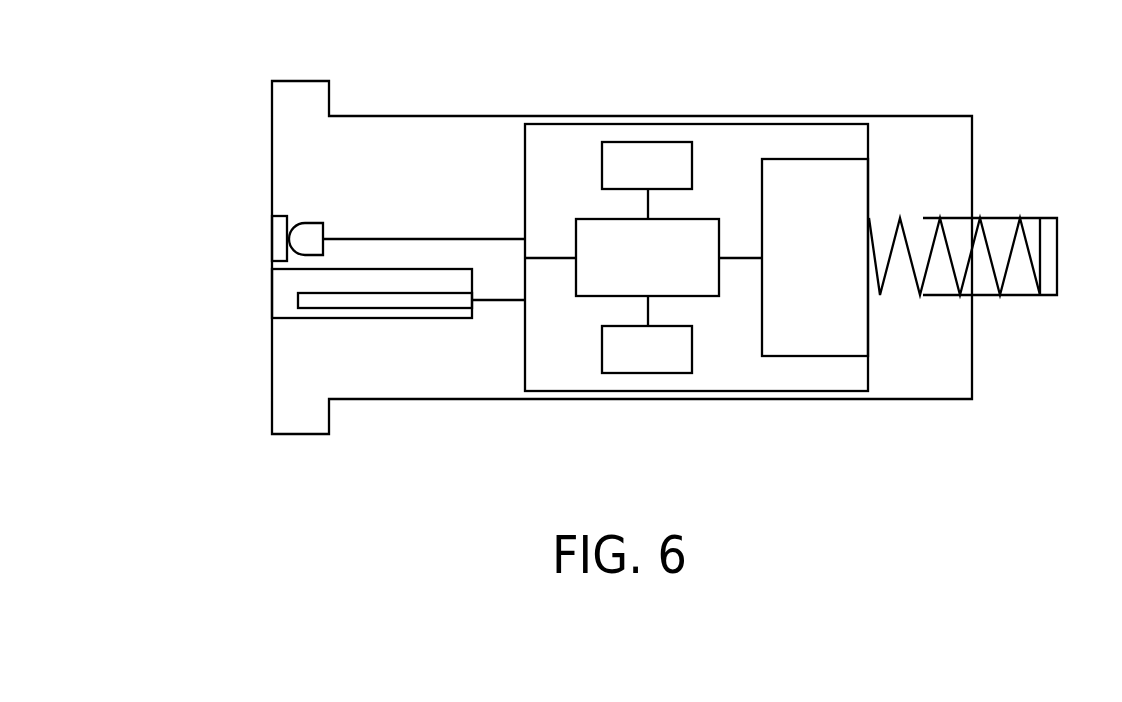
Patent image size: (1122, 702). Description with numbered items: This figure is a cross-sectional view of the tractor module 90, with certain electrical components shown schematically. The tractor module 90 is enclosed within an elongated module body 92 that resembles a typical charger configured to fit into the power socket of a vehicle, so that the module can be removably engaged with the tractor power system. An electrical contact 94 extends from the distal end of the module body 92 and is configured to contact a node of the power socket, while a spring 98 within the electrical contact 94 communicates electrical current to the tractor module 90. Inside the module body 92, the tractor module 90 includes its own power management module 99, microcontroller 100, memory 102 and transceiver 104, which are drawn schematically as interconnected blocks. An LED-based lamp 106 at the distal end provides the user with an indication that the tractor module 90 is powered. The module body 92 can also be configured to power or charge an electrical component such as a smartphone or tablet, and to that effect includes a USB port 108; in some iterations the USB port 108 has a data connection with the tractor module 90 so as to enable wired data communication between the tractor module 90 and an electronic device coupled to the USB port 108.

The tractor module 90 is at (525, 372).
The module body 92 is at (420, 116).
The electrical contact 94 is at (1002, 218).
The spring 98 is at (1007, 270).
The power management module 99 is at (818, 170).
The microcontroller 100 is at (707, 219).
The memory 102 is at (602, 151).
The transceiver 104 is at (643, 368).
The LED-based lamp 106 is at (277, 238).
The USB port 108 is at (277, 295).